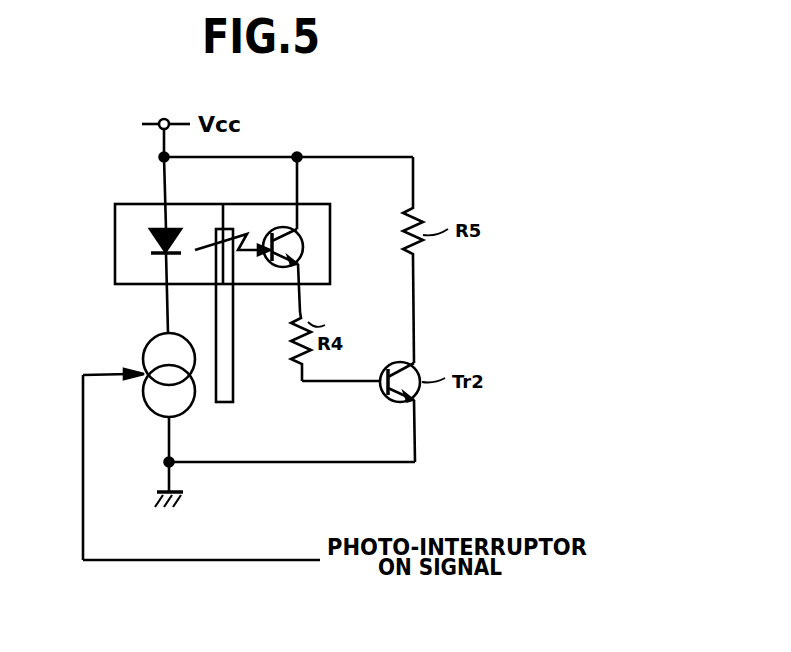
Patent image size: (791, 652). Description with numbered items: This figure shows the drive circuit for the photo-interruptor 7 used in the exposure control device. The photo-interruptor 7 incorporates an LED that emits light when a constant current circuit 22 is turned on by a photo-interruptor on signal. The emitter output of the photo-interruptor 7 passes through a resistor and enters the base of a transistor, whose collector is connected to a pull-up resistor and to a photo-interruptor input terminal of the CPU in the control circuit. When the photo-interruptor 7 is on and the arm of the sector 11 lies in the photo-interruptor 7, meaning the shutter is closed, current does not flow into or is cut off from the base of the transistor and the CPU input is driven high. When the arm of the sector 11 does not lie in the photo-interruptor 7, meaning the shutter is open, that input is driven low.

The photo-interruptor 7 is at (133, 219).
The sector 11 is at (233, 353).
The constant current circuit 22 is at (145, 372).